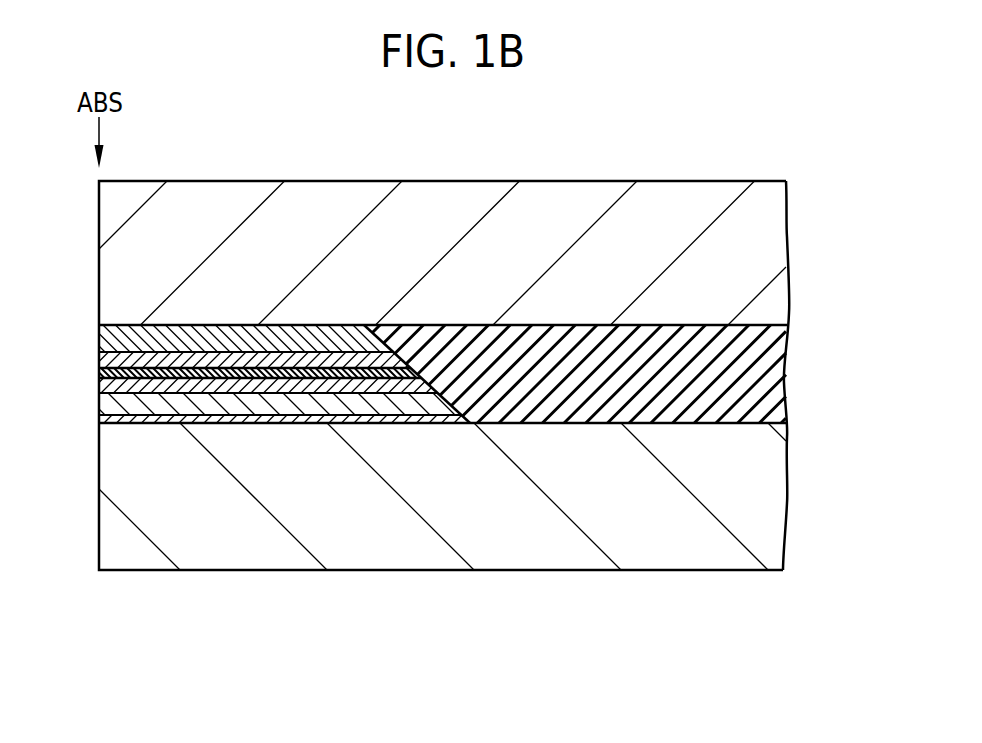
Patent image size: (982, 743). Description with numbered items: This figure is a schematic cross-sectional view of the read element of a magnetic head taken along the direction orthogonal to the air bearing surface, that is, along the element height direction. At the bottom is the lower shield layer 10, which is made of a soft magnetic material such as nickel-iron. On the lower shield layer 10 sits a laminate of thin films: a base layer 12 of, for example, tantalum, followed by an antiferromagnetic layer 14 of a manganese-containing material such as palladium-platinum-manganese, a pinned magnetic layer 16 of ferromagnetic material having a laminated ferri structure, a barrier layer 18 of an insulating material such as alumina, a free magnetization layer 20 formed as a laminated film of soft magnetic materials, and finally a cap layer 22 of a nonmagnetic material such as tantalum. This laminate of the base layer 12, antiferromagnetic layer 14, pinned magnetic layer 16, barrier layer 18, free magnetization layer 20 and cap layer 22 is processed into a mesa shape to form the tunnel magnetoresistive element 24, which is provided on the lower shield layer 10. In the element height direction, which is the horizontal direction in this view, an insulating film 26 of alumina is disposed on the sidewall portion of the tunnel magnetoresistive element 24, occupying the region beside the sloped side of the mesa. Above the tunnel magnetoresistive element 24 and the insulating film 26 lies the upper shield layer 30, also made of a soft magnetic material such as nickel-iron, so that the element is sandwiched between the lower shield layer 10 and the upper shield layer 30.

The lower shield layer 10 is at (777, 490).
The base layer 12 is at (283, 524).
The antiferromagnetic layer 14 is at (280, 513).
The pinned magnetic layer 16 is at (268, 506).
The barrier layer 18 is at (260, 501).
The free magnetization layer 20 is at (255, 493).
The cap layer 22 is at (247, 479).
The tunnel magnetoresistive (TMR) element 24 is at (407, 630).
The insulating film 26 is at (777, 381).
The upper shield layer 30 is at (777, 241).